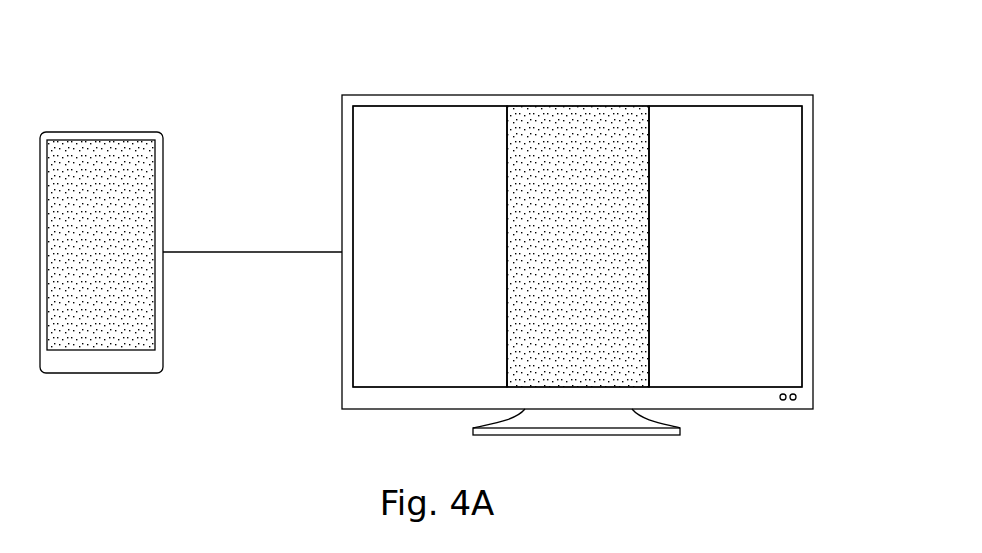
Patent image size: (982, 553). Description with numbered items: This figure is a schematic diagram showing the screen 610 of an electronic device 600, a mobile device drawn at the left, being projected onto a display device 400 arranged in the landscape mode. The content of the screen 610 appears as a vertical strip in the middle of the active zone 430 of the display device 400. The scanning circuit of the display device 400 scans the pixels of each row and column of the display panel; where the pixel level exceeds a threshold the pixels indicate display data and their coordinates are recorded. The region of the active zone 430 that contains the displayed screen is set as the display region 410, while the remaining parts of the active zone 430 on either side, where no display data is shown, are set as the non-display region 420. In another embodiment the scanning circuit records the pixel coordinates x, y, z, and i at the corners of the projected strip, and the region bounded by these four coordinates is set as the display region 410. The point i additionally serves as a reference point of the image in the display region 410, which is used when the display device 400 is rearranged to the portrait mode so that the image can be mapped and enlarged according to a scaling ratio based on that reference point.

The display device 400 is at (813, 279).
The display region 410 is at (570, 113).
The non-display region 420 is at (432, 115).
The active zone 430 is at (372, 388).
The electronic device 600 is at (76, 133).
The screen 610 is at (134, 150).
The pixel coordinate x is at (507, 103).
The pixel coordinate y is at (649, 103).
The pixel coordinate (reference point) i is at (507, 389).
The pixel coordinate z is at (649, 389).